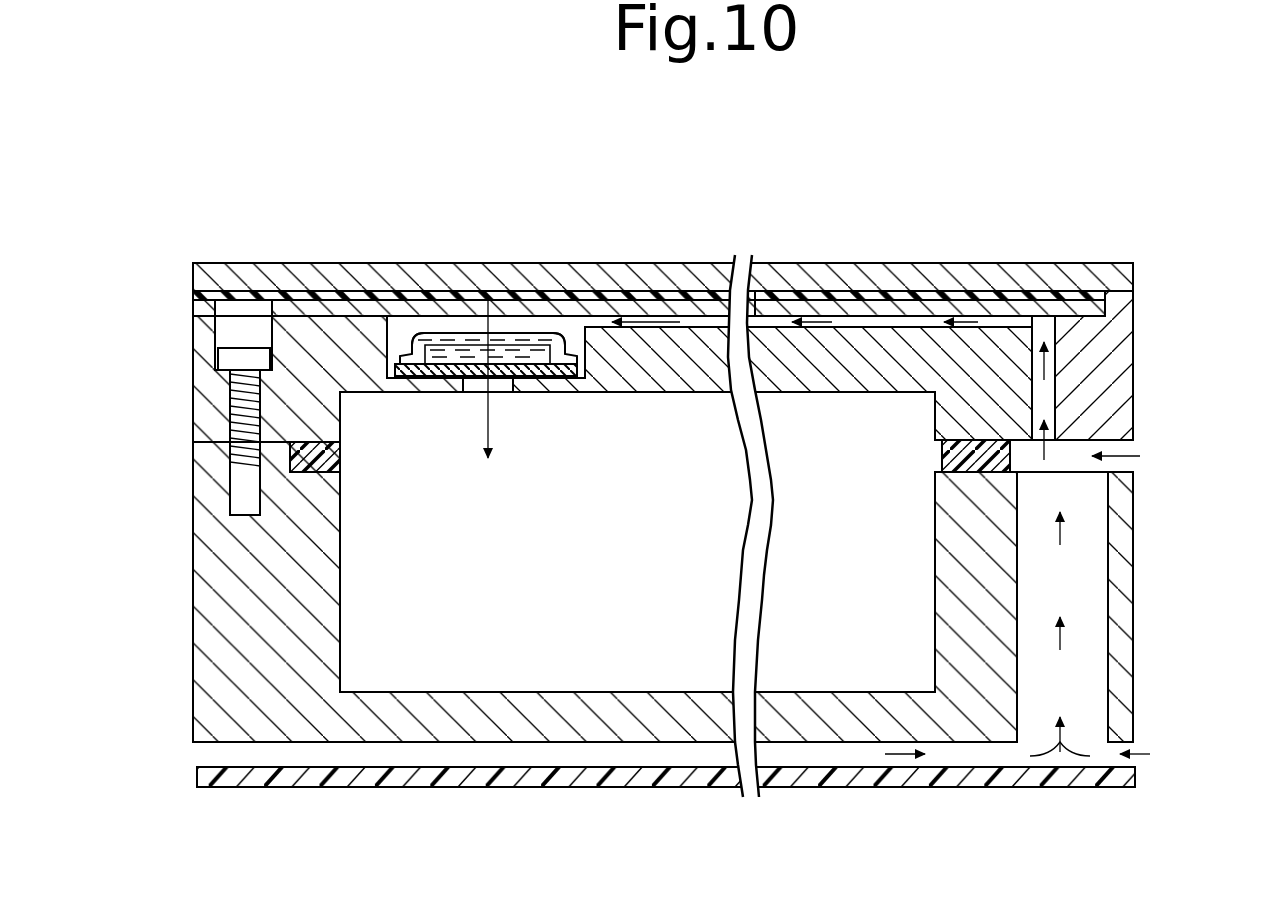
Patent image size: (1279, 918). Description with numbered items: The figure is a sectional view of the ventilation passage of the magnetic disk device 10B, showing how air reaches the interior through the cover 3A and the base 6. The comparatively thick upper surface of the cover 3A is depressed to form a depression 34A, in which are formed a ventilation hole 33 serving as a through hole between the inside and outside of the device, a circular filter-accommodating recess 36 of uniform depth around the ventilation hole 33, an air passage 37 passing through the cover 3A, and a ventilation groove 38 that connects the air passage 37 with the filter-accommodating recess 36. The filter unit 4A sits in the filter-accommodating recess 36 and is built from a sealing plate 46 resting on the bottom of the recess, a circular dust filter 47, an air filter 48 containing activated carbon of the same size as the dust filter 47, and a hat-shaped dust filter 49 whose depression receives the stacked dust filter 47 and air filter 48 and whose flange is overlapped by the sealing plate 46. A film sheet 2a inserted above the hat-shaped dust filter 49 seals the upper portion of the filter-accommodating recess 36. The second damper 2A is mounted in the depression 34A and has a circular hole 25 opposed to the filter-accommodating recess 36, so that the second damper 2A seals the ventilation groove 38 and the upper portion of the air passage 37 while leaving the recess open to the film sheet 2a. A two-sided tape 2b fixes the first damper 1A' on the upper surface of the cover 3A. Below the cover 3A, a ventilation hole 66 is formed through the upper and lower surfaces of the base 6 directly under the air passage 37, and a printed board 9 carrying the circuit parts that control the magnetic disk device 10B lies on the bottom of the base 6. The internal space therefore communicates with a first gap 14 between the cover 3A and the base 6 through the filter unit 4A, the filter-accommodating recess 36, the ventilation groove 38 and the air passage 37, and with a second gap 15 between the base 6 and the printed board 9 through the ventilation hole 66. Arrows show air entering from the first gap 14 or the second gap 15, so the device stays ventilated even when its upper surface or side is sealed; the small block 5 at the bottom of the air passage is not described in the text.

The magnetic disk device 10B is at (1021, 197).
The first damper 1A' is at (663, 228).
The film sheet 2a is at (488, 292).
The second damper 2A is at (842, 295).
The two-sided tape 2b is at (878, 306).
The cover 3A is at (1148, 322).
The filter unit 4A is at (566, 330).
The filter 5 is at (945, 456).
The base 6 is at (1150, 531).
The printed board 9 is at (392, 788).
The first gap 14 is at (1125, 448).
The second gap 15 is at (838, 768).
The circular hole 25 is at (527, 314).
The ventilation hole 33 is at (503, 390).
The depression 34A is at (357, 318).
The filter-accommodating recess 36 is at (405, 330).
The air passage 37 is at (1047, 388).
The ventilation groove 38 is at (918, 320).
The sealing plate 46 is at (405, 376).
The dust filter 47 is at (477, 368).
The air filter 48 is at (455, 345).
The hat-shaped dust filter 49 is at (490, 323).
The ventilation hole 66 is at (1090, 600).